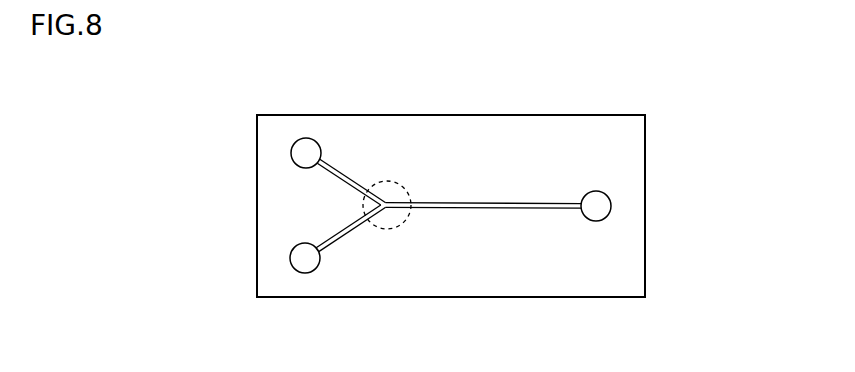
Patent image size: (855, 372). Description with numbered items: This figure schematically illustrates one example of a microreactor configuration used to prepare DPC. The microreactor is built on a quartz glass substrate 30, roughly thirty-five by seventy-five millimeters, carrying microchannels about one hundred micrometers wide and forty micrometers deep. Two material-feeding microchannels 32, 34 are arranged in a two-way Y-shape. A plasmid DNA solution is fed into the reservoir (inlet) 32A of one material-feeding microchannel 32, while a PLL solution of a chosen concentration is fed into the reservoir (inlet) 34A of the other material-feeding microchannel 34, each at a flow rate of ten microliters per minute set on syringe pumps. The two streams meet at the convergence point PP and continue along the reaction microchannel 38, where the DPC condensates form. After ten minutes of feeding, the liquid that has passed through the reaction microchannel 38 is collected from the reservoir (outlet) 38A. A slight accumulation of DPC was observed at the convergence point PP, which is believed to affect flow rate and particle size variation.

The quartz glass substrate 30 is at (588, 113).
The material-feeding microchannel 32 is at (331, 161).
The reservoir (inlet) 32A is at (293, 143).
The material-feeding microchannel 34 is at (327, 254).
The reservoir (inlet) 34A is at (297, 244).
The reaction microchannel 38 is at (490, 203).
The reservoir (outlet) 38A is at (607, 195).
The convergence point PP is at (396, 221).